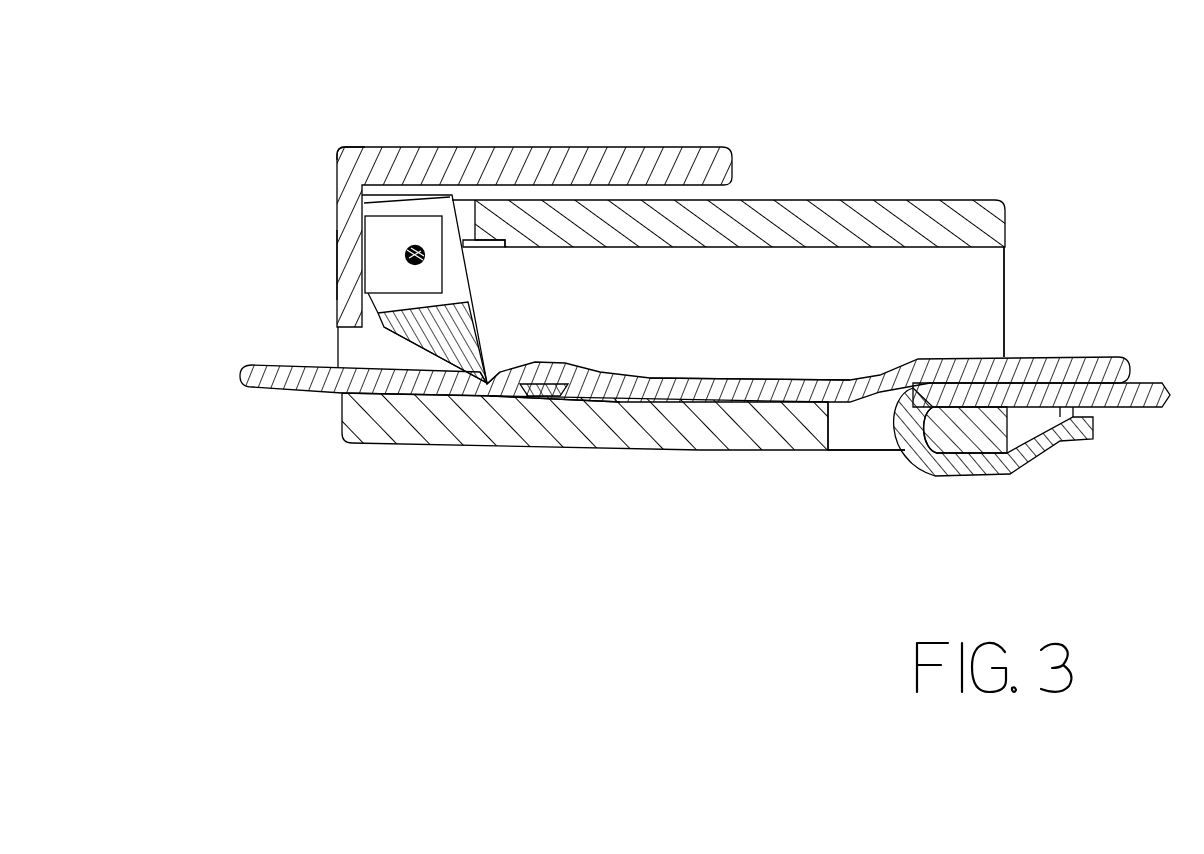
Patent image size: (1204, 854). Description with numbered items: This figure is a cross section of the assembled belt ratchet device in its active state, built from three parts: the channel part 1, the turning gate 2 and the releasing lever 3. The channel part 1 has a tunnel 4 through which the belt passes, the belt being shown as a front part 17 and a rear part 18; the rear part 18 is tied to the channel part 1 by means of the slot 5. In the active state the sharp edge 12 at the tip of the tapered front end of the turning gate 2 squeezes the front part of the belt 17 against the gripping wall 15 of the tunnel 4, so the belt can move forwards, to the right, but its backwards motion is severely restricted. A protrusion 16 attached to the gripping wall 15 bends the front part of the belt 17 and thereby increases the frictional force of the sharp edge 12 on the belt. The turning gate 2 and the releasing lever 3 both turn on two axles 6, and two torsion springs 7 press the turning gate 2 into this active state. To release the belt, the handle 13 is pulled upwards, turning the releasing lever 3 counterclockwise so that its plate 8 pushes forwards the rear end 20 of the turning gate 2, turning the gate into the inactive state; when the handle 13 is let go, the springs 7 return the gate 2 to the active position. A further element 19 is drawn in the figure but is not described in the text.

The channel part 1 is at (795, 232).
The turning gate 2 is at (453, 267).
The releasing lever 3 is at (350, 150).
The tunnel 4 is at (977, 268).
The slot 5 is at (867, 432).
The axles 6 is at (422, 262).
The torsion springs 7 is at (507, 246).
The plate 8 is at (345, 232).
The sharp edge 12 is at (490, 380).
The handle 13 is at (483, 147).
The gripping wall 15 is at (663, 380).
The protrusion 16 is at (562, 394).
The front part of the belt 17 is at (273, 390).
The rear part of the belt 18 is at (1157, 407).
The clamping surface 19 is at (410, 348).
The rear end of the turning gate 20 is at (378, 323).